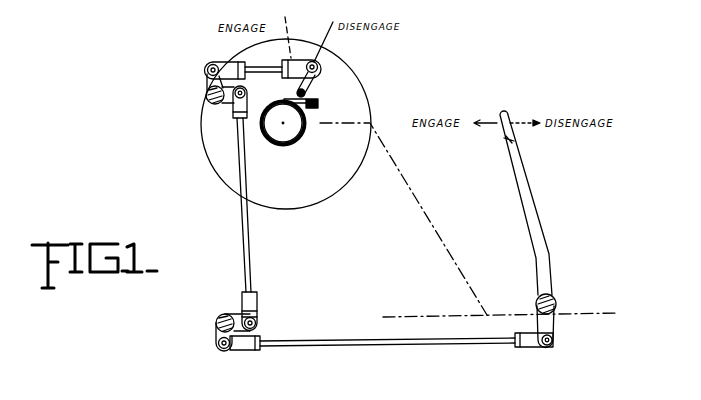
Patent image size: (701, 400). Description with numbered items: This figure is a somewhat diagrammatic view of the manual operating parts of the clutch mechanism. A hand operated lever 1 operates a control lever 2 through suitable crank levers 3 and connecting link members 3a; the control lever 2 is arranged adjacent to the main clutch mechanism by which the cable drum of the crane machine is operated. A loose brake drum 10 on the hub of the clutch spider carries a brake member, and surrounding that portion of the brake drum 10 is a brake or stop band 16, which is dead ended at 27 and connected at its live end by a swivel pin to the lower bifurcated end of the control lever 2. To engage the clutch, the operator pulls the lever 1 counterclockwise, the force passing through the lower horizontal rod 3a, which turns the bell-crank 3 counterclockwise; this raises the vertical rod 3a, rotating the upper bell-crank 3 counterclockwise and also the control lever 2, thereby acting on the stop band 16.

The hand operated lever 1 is at (530, 208).
The control lever 2 is at (318, 78).
The crank lever 3 is at (218, 338).
The connecting link member 3a is at (255, 63).
The brake drum 10 is at (275, 142).
The brake or stop band 16 is at (294, 147).
The dead end of stop band 27 is at (318, 108).